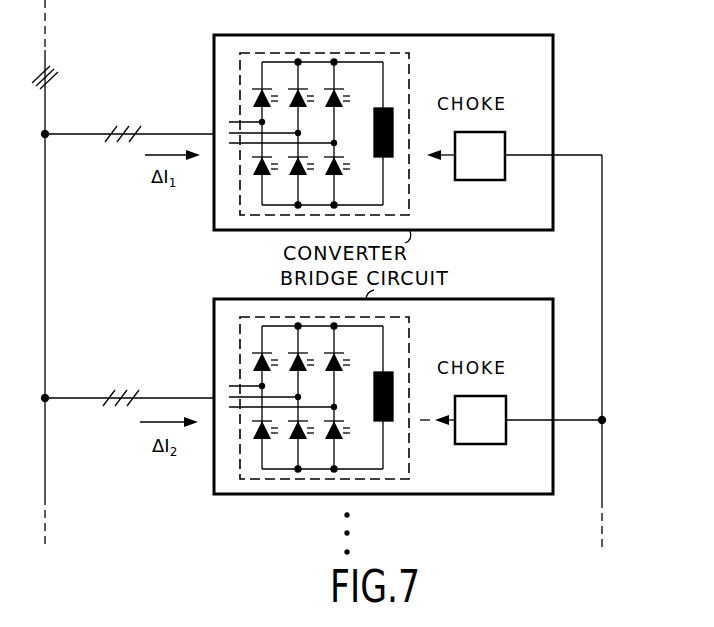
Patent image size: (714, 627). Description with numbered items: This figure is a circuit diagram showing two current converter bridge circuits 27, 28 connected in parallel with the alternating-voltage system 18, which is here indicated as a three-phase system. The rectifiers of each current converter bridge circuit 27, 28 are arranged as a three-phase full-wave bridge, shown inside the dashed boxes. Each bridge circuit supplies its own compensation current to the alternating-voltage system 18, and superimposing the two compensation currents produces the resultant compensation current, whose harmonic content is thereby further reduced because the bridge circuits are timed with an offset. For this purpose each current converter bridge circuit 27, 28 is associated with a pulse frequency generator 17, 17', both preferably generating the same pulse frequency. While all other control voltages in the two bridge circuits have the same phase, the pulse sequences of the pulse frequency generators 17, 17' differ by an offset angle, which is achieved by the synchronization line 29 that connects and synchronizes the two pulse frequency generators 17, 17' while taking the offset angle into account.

The alternating-voltage system 18 is at (47, 52).
The current converter bridge circuit 27 is at (526, 77).
The current converter bridge circuit 28 is at (532, 335).
The pulse frequency generator 17 is at (514, 156).
The pulse frequency generator 17' is at (511, 420).
The synchronization line 29 is at (602, 282).